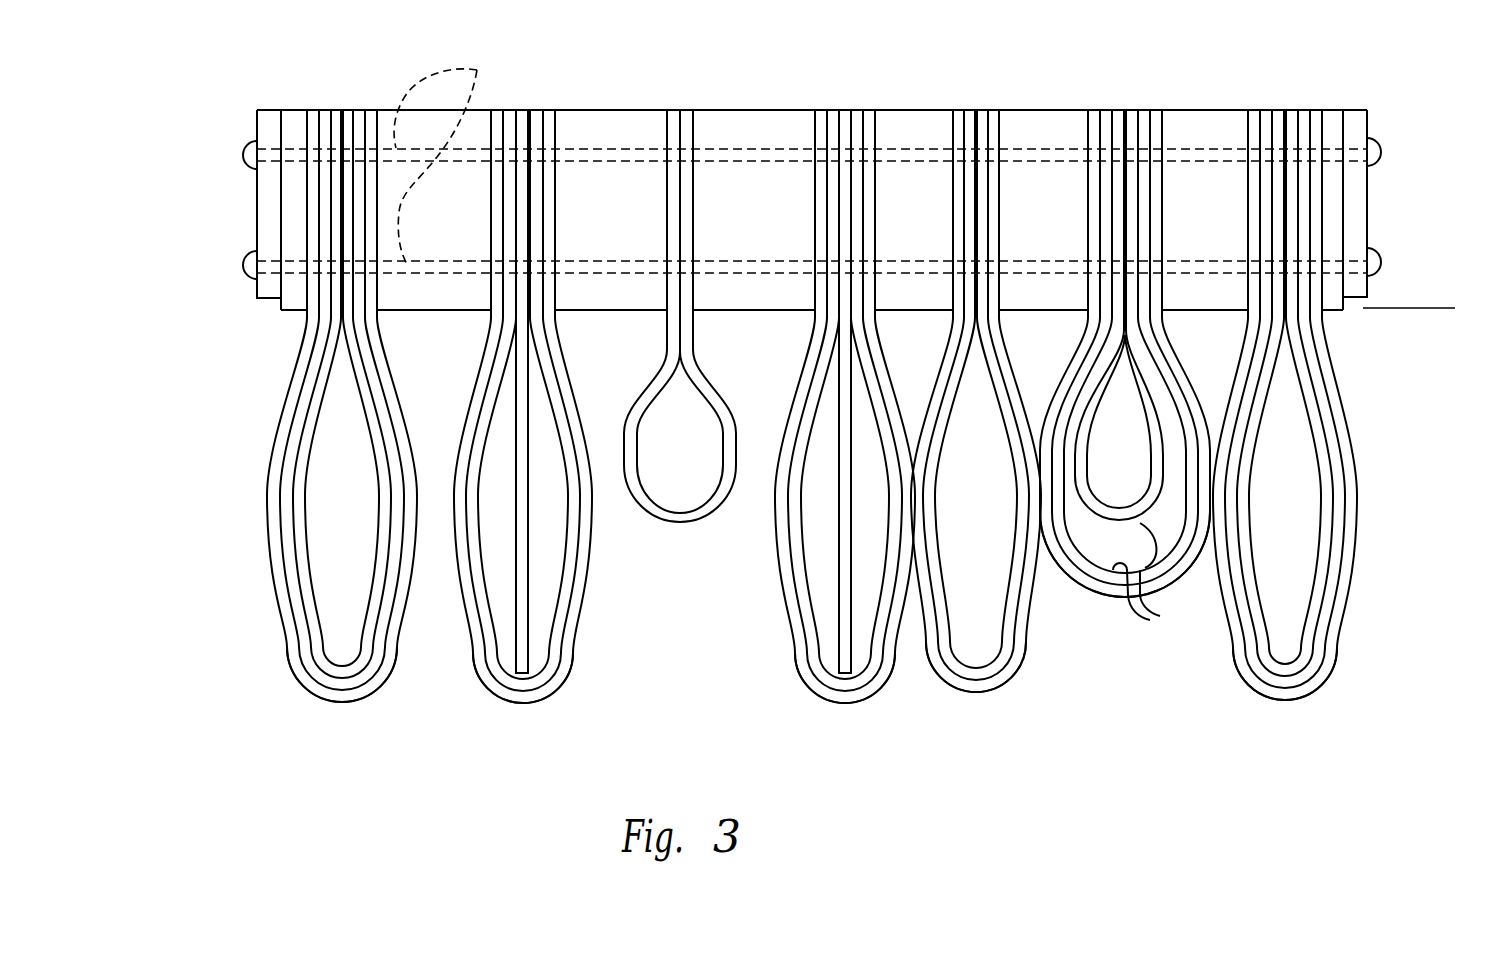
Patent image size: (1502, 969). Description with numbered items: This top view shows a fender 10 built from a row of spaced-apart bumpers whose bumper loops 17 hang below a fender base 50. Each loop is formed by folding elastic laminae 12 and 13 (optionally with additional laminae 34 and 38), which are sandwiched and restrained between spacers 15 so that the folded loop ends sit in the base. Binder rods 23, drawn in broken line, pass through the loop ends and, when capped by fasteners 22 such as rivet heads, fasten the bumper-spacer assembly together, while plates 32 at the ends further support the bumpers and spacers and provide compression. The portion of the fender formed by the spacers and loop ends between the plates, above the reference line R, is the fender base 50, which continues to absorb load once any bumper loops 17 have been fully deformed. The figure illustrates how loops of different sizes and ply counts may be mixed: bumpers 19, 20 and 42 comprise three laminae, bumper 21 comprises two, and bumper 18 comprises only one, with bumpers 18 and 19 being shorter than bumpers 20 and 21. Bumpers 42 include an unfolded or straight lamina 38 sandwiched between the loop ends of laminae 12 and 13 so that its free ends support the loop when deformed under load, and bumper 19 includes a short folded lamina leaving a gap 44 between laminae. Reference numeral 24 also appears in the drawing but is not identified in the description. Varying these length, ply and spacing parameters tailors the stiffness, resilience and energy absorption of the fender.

The fender 10 is at (330, 775).
The foldable elastic lamina 12 is at (680, 366).
The foldable elastic lamina 13 is at (480, 532).
The spacer 15 is at (293, 110).
The bumper loop 17 is at (307, 688).
The bumper 18 is at (687, 542).
The bumper 19 is at (1160, 663).
The bumper 20 is at (247, 615).
The bumper 21 is at (1035, 682).
The fastener 22 is at (253, 253).
The binder rod 23 is at (478, 68).
The gap between loops 24 is at (905, 423).
The plate 32 is at (257, 123).
The lamina 34 is at (310, 552).
The unfolded or straight lamina 38 is at (852, 643).
The bumper 42 is at (477, 690).
The gap 44 is at (1147, 618).
The fender base 50 is at (1406, 238).